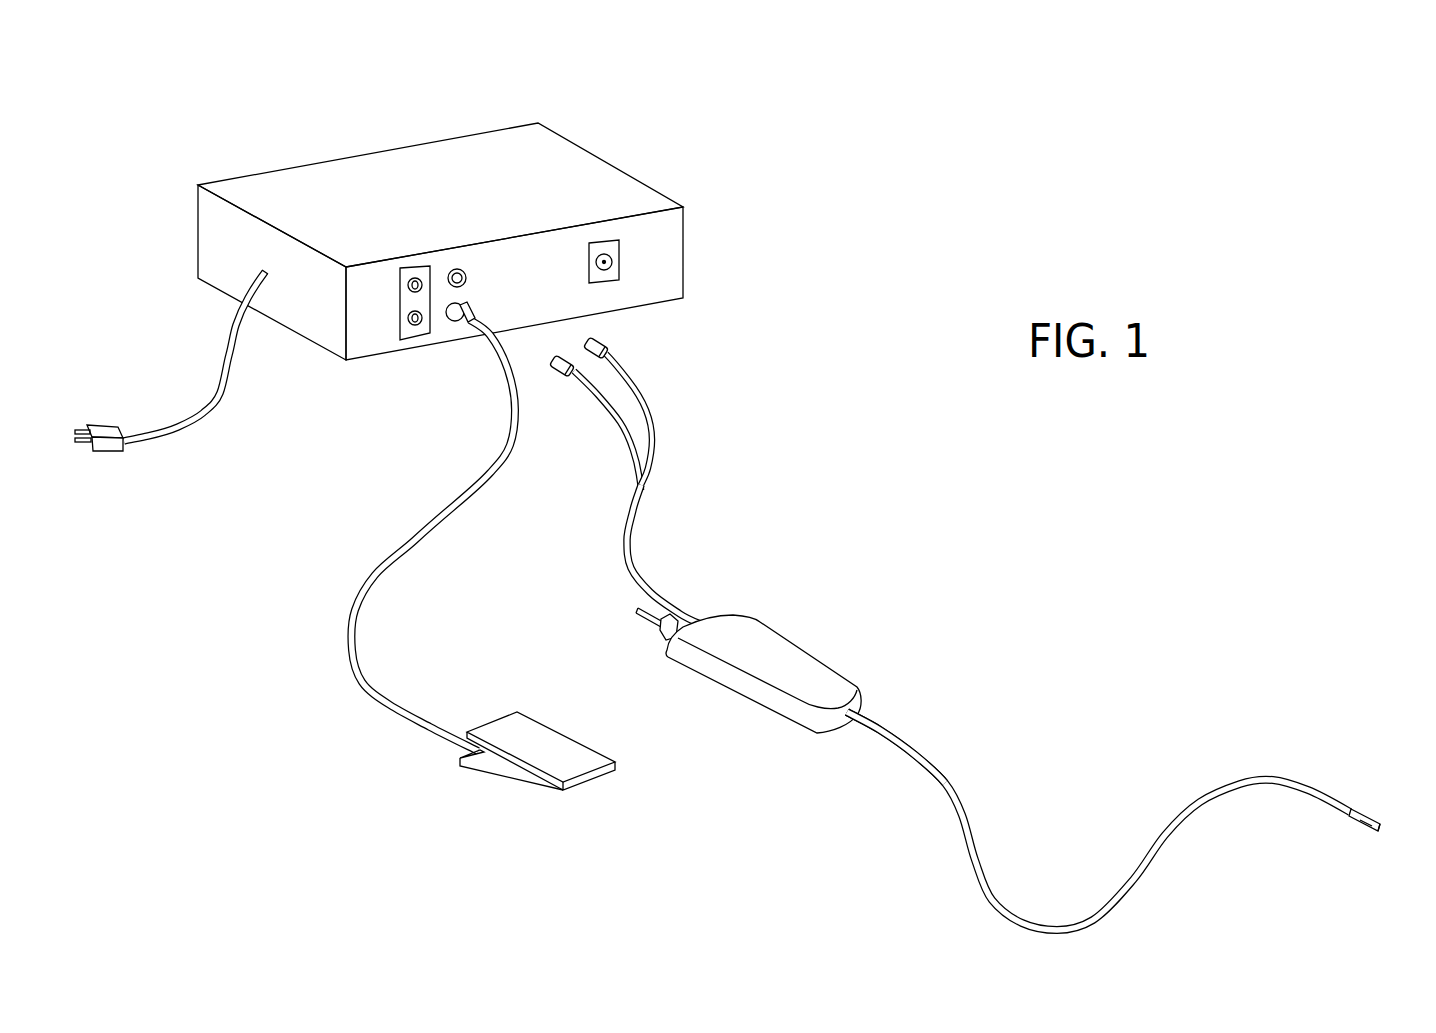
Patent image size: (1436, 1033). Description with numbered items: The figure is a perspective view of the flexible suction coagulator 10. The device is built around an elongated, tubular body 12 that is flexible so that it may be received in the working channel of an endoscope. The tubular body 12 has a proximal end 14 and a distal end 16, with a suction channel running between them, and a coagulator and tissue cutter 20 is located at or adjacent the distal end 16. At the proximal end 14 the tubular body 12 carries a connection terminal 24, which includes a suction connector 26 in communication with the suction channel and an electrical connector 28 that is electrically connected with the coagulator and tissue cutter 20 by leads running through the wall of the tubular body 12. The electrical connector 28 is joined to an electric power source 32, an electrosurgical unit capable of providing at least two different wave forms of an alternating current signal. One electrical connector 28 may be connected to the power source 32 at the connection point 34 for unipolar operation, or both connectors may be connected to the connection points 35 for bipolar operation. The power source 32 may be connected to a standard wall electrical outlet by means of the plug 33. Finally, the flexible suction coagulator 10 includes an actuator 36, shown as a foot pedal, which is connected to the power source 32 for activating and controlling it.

The flexible suction coagulator 10 is at (212, 139).
The elongated tubular body 12 is at (955, 826).
The proximal end 14 is at (886, 730).
The distal end 16 is at (1345, 805).
The coagulator and tissue cutter 20 is at (1365, 834).
The connection terminal 24 is at (780, 652).
The suction connector 26 is at (642, 620).
The electrical connector 28 is at (573, 367).
The electric power source 32 is at (609, 180).
The plug 33 is at (111, 452).
The connection point 34 is at (456, 268).
The connection points 35 is at (410, 292).
The actuator 36 is at (530, 750).